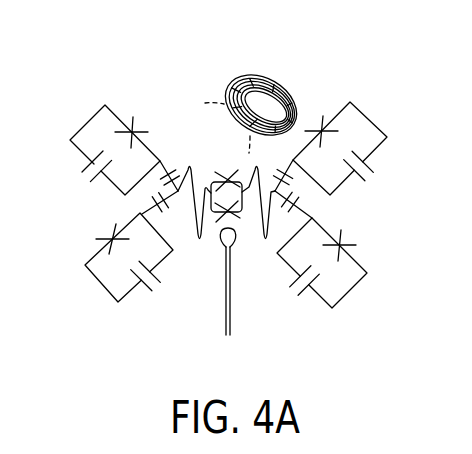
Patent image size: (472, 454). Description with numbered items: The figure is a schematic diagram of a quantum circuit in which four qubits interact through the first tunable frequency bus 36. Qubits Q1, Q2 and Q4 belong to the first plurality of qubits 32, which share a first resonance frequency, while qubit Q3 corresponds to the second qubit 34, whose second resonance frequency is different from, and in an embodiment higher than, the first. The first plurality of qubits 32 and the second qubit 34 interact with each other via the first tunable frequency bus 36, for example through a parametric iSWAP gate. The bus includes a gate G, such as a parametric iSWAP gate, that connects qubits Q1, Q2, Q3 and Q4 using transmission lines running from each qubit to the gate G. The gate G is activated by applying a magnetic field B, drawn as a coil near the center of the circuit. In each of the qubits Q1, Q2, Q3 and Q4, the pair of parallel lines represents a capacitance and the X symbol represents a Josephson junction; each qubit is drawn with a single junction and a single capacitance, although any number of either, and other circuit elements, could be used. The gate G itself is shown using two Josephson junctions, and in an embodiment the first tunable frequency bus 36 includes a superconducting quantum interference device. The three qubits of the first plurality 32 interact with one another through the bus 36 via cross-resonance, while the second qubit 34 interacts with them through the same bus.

The first plurality of qubits 32 is at (93, 113).
The second qubit 34 is at (327, 313).
The first tunable frequency bus 36 is at (197, 132).
The magnetic field B is at (293, 96).
The gate G is at (246, 243).
The qubit Q1 is at (122, 256).
The qubit Q2 is at (109, 113).
The qubit Q3 is at (331, 295).
The qubit Q4 is at (342, 148).